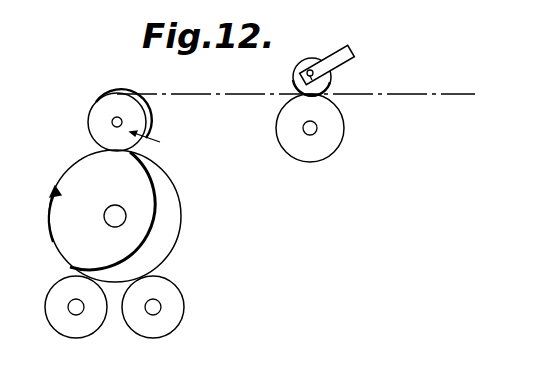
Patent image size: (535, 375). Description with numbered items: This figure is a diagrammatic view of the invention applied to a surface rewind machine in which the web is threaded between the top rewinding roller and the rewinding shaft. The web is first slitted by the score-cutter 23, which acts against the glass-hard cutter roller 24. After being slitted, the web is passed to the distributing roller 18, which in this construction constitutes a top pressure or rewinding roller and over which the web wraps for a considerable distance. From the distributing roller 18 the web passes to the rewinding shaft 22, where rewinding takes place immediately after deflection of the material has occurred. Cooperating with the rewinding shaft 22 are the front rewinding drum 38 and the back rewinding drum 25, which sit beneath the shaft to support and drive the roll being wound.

The distributing roller 18 is at (96, 124).
The rewinding shaft 22 is at (126, 216).
The score-cutter 23 is at (304, 61).
The cutter roller 24 is at (323, 152).
The back rewinding drum 25 is at (167, 326).
The front rewinding drum 38 is at (57, 323).